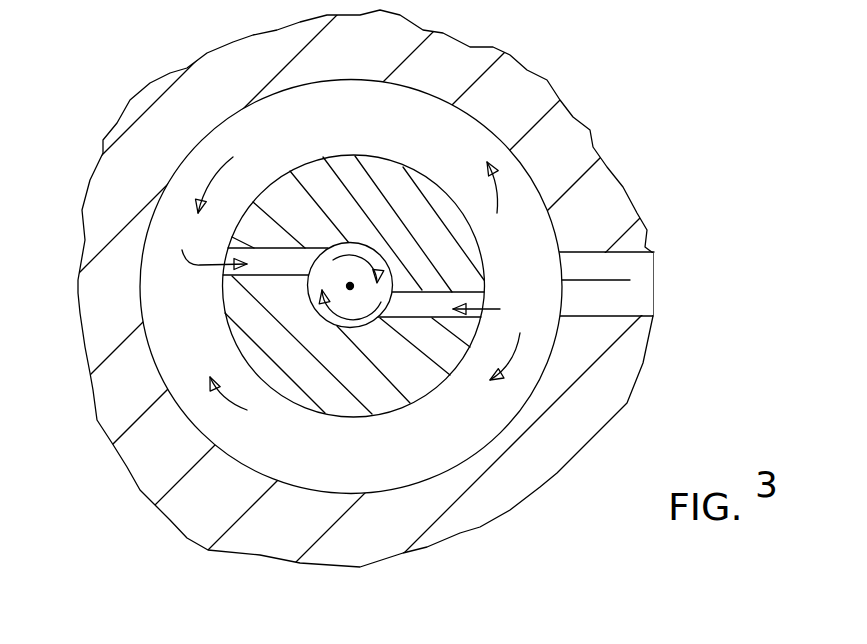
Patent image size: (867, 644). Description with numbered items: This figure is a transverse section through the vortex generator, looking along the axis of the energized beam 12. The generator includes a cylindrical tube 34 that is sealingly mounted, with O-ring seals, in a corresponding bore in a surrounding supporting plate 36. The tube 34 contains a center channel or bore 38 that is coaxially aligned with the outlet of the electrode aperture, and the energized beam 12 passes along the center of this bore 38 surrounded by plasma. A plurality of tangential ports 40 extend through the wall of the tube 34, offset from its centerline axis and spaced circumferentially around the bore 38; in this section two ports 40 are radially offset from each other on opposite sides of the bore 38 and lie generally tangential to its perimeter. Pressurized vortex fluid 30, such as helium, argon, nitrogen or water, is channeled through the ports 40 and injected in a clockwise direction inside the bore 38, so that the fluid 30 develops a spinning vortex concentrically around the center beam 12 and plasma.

The energized beam 12 is at (350, 283).
The fluid 30 is at (351, 287).
The tube 34 is at (420, 215).
The supporting plate 36 is at (540, 88).
The bore 38 is at (311, 318).
The tangential ports 40 is at (276, 248).